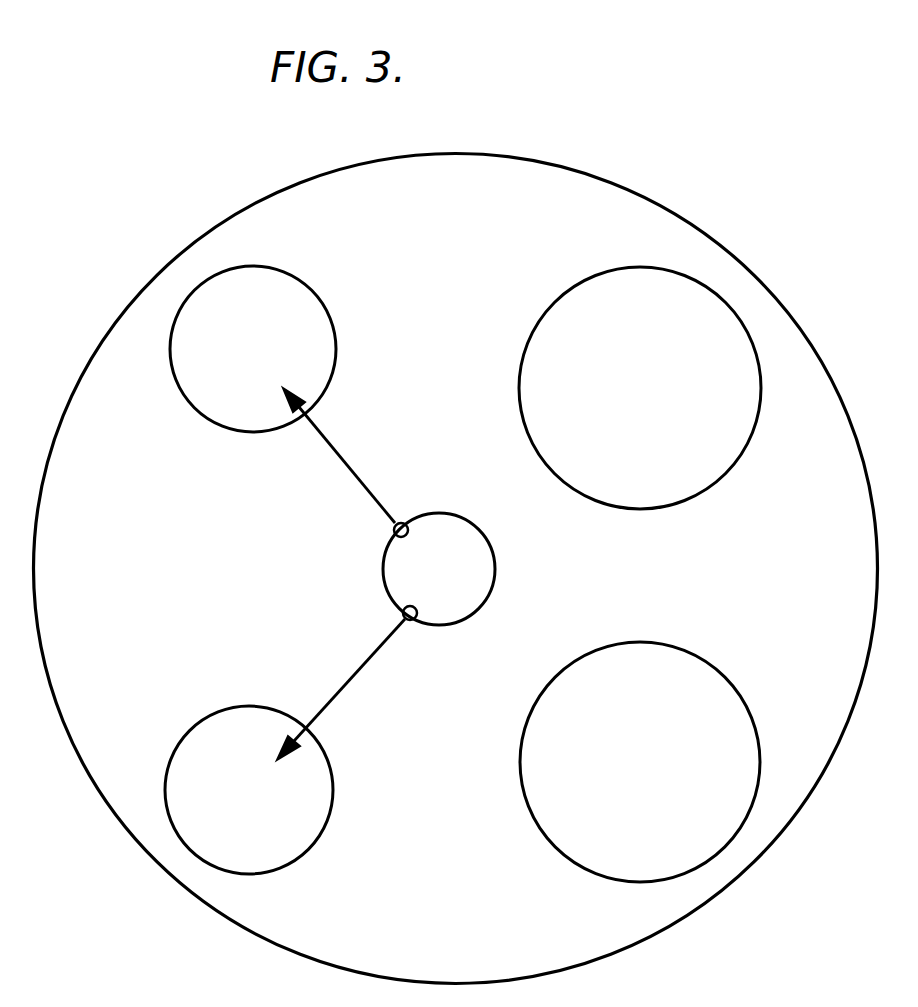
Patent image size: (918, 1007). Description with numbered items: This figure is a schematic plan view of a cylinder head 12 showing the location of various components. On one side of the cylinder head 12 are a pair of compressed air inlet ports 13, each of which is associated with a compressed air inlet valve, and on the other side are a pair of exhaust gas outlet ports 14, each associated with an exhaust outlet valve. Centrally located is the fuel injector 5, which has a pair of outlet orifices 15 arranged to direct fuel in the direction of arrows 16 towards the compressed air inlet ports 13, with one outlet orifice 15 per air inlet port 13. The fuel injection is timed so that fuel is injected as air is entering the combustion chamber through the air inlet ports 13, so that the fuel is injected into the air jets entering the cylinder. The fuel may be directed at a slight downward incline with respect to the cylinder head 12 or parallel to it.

The cylinder head 12 is at (432, 904).
The compressed air inlet ports 13 is at (270, 347).
The exhaust gas outlet ports 14 is at (648, 388).
The fuel injector 5 is at (468, 572).
The outlet orifices 15 is at (393, 531).
The arrows 16 is at (337, 443).